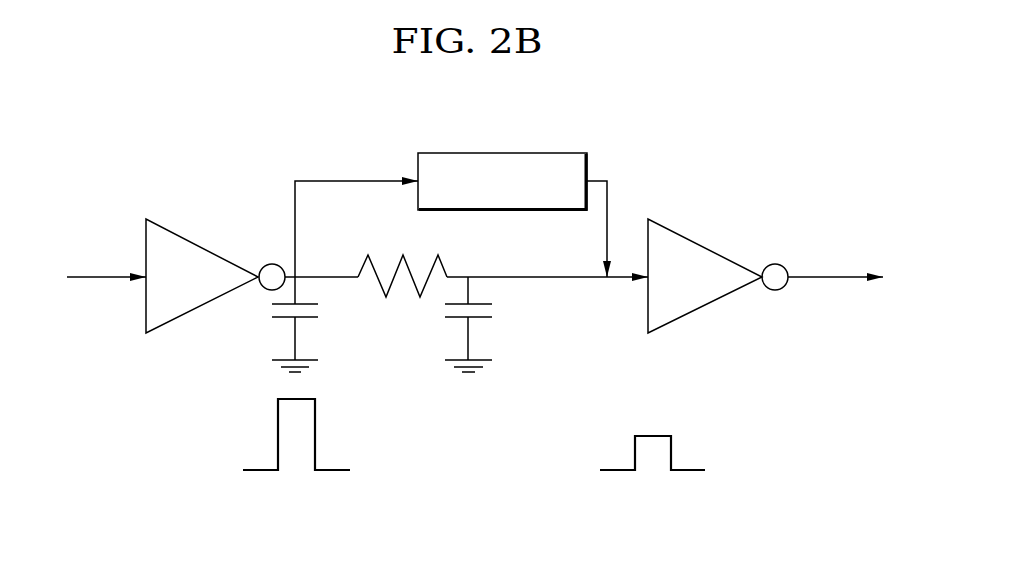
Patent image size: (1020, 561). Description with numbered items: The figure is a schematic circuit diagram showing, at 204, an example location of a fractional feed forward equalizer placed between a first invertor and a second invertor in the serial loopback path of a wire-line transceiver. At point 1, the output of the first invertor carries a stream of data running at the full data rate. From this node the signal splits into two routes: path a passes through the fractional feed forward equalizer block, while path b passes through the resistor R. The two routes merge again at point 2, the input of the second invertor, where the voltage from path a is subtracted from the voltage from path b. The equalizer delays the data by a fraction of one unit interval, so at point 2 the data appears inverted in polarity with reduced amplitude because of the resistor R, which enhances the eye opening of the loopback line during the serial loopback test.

The example location of the frac. FFE 204 is at (473, 328).
The point 1 is at (315, 294).
The point 2 is at (624, 292).
The path a is at (356, 214).
The path b is at (522, 324).
The resistor R is at (402, 262).